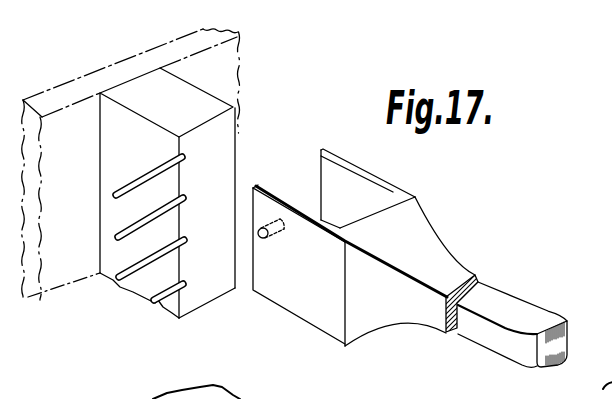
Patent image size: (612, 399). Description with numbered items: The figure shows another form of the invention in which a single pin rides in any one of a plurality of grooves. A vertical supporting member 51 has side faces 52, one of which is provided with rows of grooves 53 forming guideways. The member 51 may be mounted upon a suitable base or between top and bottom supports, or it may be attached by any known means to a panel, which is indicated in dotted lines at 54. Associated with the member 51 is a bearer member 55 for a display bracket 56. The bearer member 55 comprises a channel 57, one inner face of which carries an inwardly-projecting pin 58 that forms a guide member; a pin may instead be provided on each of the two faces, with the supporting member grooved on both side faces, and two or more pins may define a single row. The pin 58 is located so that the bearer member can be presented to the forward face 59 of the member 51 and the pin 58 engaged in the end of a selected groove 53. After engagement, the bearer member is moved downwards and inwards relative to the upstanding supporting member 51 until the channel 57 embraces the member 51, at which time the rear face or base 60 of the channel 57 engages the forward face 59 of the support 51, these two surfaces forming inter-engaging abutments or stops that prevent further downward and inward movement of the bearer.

The vertical supporting member 51 is at (234, 102).
The side faces 52 is at (168, 199).
The grooves 53 is at (135, 264).
The panel 54 is at (244, 42).
The bearer member 55 is at (289, 301).
The display bracket 56 is at (462, 274).
The channel 57 is at (298, 176).
The inwardly-projecting pin 58 is at (273, 240).
The forward face 59 is at (206, 297).
The rear face or base of the channel 60 is at (385, 196).